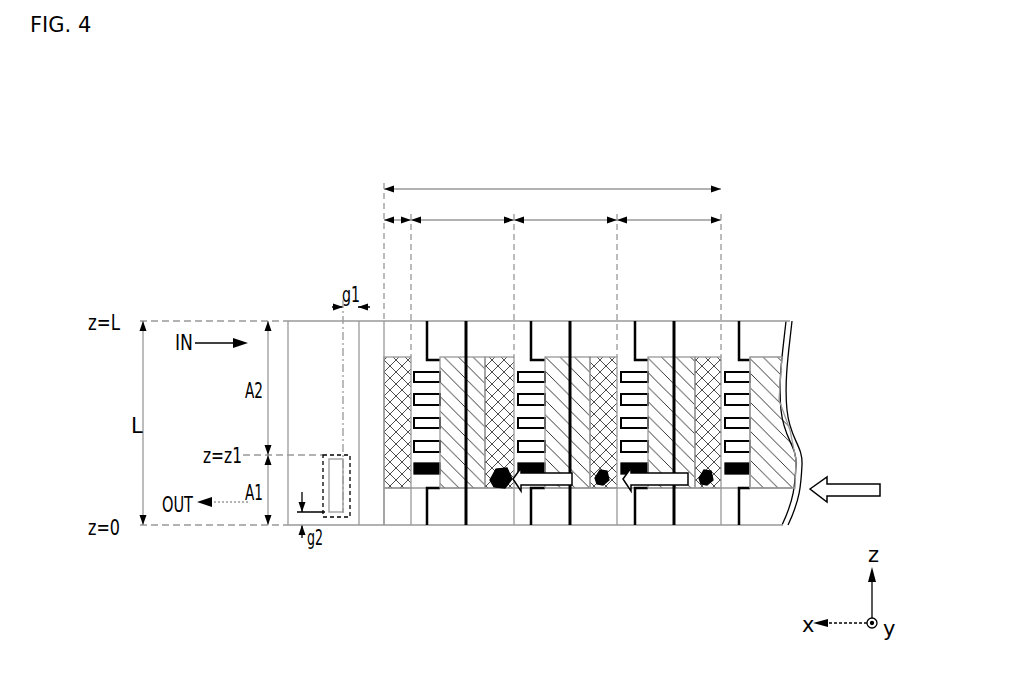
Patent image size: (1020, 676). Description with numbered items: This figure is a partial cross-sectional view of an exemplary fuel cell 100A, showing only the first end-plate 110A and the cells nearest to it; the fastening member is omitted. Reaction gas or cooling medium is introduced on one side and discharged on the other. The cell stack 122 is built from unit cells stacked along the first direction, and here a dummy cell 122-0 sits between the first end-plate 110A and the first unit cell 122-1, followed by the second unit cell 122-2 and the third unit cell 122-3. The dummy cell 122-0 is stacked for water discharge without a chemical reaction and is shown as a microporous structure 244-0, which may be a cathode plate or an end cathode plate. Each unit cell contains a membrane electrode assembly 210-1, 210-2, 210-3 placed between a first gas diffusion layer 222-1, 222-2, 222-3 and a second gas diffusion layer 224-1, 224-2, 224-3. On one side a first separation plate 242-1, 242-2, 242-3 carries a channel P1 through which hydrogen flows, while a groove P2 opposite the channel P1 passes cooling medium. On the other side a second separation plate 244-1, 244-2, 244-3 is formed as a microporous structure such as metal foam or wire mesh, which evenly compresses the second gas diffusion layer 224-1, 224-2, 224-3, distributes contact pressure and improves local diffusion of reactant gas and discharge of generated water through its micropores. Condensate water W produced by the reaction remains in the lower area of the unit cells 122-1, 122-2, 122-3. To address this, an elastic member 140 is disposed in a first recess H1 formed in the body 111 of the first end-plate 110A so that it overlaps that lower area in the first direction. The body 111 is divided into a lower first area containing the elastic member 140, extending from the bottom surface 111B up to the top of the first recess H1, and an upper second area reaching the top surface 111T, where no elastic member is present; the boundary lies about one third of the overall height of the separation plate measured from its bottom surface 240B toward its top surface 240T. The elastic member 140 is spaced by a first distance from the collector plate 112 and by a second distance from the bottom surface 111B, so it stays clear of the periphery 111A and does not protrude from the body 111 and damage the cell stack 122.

The fuel cell 100A is at (825, 205).
The first end-plate 110A is at (301, 448).
The body 111 is at (338, 527).
The periphery 111A is at (362, 348).
The top surface 111T is at (297, 321).
The bottom surface 111B is at (297, 527).
The collector plate 112 is at (370, 523).
The elastic member 140 is at (330, 489).
The first recess H1 is at (385, 528).
The cell stack 122 is at (589, 383).
The dummy cell 122-0 is at (405, 342).
The first unit cell 122-1 is at (467, 399).
The second unit cell 122-2 is at (578, 399).
The third unit cell 122-3 is at (706, 399).
The microporous structure 244-0 is at (397, 355).
The second separation plate 244-1 is at (498, 370).
The second separation plate 244-2 is at (604, 370).
The second separation plate 244-3 is at (710, 357).
The first gas diffusion layer 222-1 is at (452, 368).
The first gas diffusion layer 222-2 is at (557, 370).
The first gas diffusion layer 222-3 is at (662, 370).
The second gas diffusion layer 224-1 is at (474, 370).
The second gas diffusion layer 224-2 is at (579, 370).
The second gas diffusion layer 224-3 is at (687, 370).
The first separation plate 242-1 is at (440, 489).
The first separation plate 242-2 is at (545, 489).
The first separation plate 242-3 is at (648, 489).
The membrane electrode assembly 210-1 is at (467, 518).
The membrane electrode assembly 210-2 is at (571, 518).
The membrane electrode assembly 210-3 is at (675, 518).
The top surface of separation plate 240T is at (717, 321).
The bottom surface of separation plate 240B is at (726, 526).
The channel P1 is at (758, 378).
The groove P2 is at (752, 360).
The condensate water W is at (497, 485).